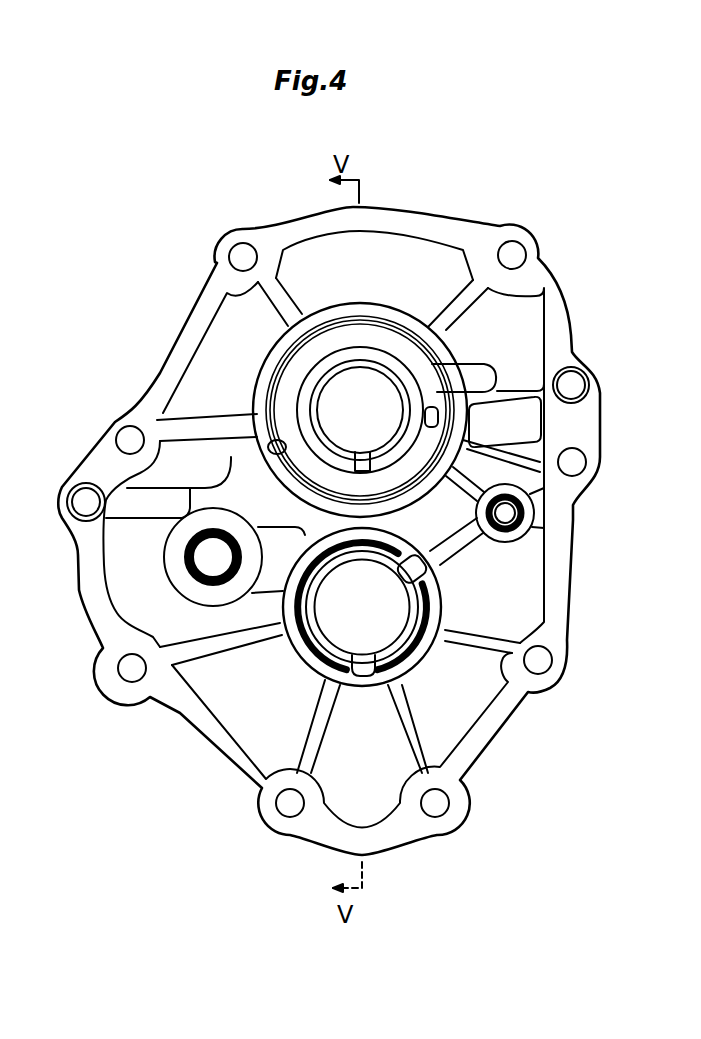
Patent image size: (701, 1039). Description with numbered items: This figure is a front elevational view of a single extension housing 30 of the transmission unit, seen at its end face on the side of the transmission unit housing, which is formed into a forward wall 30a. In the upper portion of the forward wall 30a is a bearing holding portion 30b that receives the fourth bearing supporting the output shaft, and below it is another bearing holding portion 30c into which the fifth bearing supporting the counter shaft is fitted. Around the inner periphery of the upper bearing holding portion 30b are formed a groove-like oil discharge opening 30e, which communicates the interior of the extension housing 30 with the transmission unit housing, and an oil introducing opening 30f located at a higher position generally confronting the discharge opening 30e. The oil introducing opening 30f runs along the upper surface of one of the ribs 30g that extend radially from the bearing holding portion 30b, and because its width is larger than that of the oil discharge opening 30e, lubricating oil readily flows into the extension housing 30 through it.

The extension housing 30 is at (461, 214).
The forward wall 30a is at (320, 245).
The bearing holding portion 30b is at (394, 318).
The bearing holding portion 30c is at (440, 592).
The oil discharge opening 30e is at (270, 456).
The oil introducing opening 30f is at (468, 378).
The ribs 30g is at (510, 394).